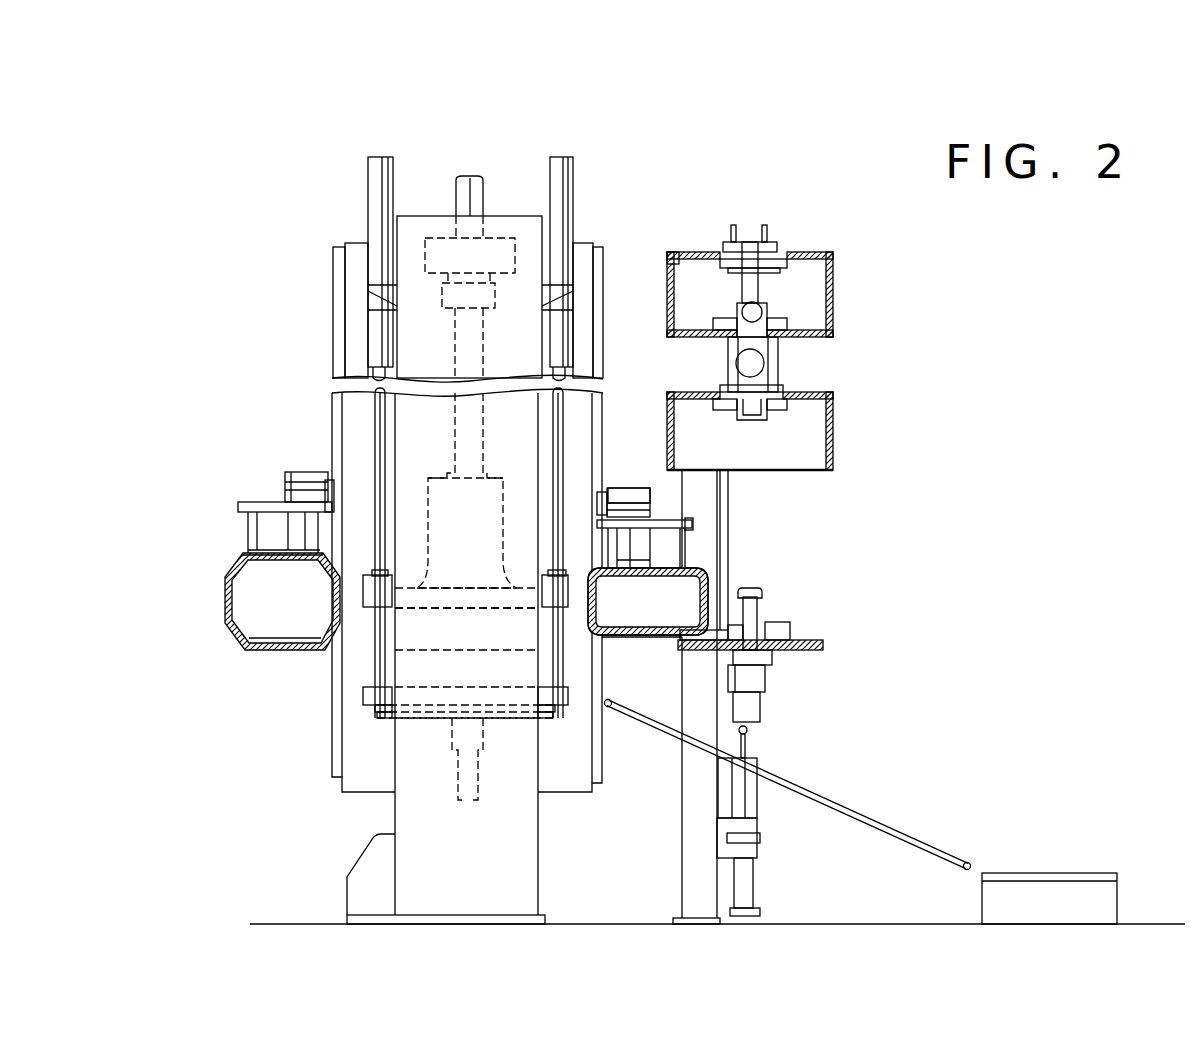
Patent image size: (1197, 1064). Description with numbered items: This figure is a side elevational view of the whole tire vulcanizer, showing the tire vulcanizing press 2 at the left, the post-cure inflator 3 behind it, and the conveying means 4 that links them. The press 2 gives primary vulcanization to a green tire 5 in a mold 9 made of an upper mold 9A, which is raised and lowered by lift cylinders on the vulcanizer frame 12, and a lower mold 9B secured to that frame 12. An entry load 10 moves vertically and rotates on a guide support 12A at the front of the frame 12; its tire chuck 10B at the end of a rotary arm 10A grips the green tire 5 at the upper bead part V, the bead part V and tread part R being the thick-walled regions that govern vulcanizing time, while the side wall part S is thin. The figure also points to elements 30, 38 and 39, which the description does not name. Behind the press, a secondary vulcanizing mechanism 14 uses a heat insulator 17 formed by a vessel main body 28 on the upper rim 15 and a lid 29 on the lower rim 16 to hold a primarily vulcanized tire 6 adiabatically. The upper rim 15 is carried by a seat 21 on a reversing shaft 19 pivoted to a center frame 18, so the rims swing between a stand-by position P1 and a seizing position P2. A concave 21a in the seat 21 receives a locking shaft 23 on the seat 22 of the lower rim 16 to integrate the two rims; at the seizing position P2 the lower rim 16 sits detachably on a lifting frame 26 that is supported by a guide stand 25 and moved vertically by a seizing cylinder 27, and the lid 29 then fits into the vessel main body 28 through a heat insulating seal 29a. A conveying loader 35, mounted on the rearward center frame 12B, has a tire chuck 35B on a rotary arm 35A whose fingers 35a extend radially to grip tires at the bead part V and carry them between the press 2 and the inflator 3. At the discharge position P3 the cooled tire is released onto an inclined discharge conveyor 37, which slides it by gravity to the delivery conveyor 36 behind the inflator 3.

The tire vulcanizing press 2 is at (505, 216).
The post-cure inflator 3 is at (779, 357).
The conveying means 4 is at (938, 841).
The green tire 5 is at (225, 608).
The primarily vulcanized tire 6 is at (590, 618).
The mold 9 is at (372, 722).
The upper mold 9A is at (378, 635).
The lower mold 9B is at (378, 665).
The entry load 10 is at (251, 488).
The rotary arm 10A is at (267, 500).
The tire chuck 10B is at (245, 505).
The vulcanizer frame 12 is at (519, 435).
The guide support 12A is at (353, 413).
The rearward center frame 12B is at (580, 412).
The secondary vulcanizing mechanism 14 is at (783, 355).
The upper rim 15 is at (787, 318).
The lower rim 16 is at (780, 630).
The heat insulator 17 is at (833, 268).
The center frame 18 is at (680, 847).
The reversing shaft 19 is at (735, 370).
The seat 21 is at (728, 345).
The concave 21a is at (758, 303).
The seat 22 is at (770, 655).
The locking shaft 23 is at (758, 607).
The guide stand 25 is at (748, 676).
The lifting frame 26 is at (748, 702).
The seizing cylinder 27 is at (757, 880).
The vessel main body 28 is at (833, 300).
The lid 29 is at (823, 645).
The heat insulating seal 29a is at (672, 255).
The pipe connection 30 is at (695, 652).
The conveying loader 35 is at (620, 498).
The rotary arm 35A is at (652, 507).
The tire chuck 35B is at (690, 522).
The finger 35a is at (630, 570).
The delivery conveyor 36 is at (1117, 897).
The discharge conveyor 37 is at (900, 822).
The upper die 38 is at (597, 462).
The lower die 39 is at (600, 542).
The bead part V is at (245, 560).
The tread part R is at (223, 587).
The side wall part S is at (233, 640).
The stand-by position P1 is at (713, 301).
The seizing position P2 is at (783, 581).
The discharge position P3 is at (655, 673).